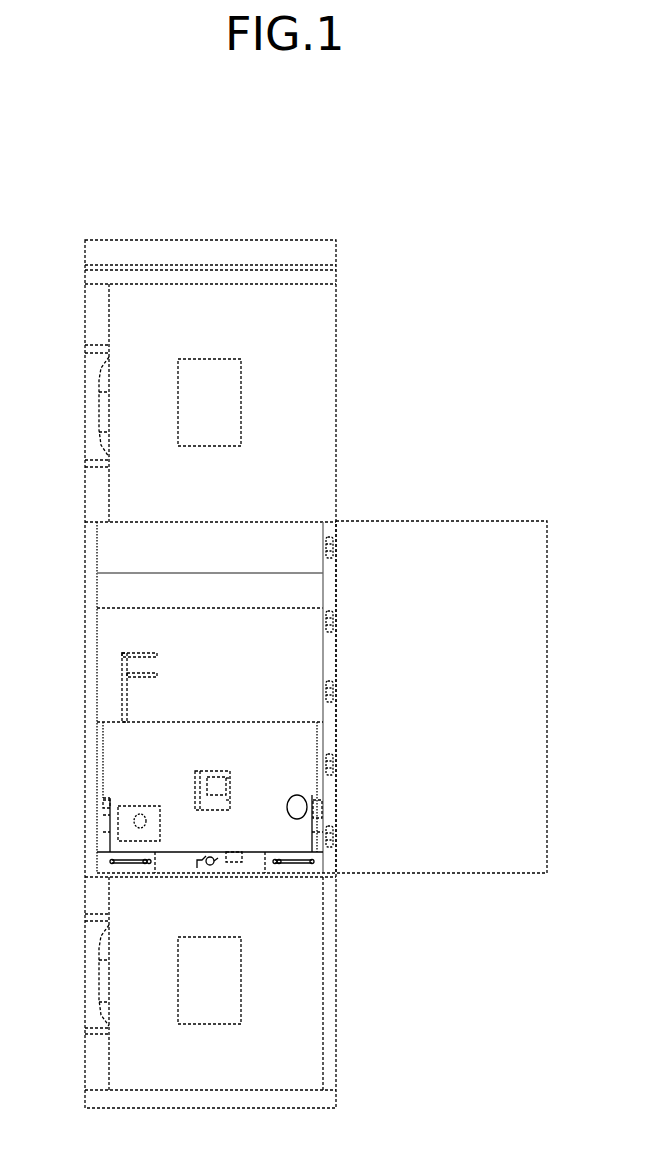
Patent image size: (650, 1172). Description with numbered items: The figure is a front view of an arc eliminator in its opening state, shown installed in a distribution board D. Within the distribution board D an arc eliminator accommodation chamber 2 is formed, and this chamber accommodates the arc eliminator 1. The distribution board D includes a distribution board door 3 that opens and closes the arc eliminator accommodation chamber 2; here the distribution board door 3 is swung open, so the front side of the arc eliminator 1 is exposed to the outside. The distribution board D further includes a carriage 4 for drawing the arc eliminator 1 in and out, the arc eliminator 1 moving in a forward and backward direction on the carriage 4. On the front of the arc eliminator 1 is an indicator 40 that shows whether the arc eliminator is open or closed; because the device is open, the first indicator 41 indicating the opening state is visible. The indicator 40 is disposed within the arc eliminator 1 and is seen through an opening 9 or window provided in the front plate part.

The distribution board D is at (362, 255).
The arc eliminator 1 is at (108, 751).
The arc eliminator accommodation chamber 2 is at (110, 672).
The distribution board door 3 is at (439, 531).
The carriage 4 is at (253, 865).
The opening 9 is at (133, 843).
The indicator 40 is at (125, 834).
The first indicator 41 is at (134, 817).